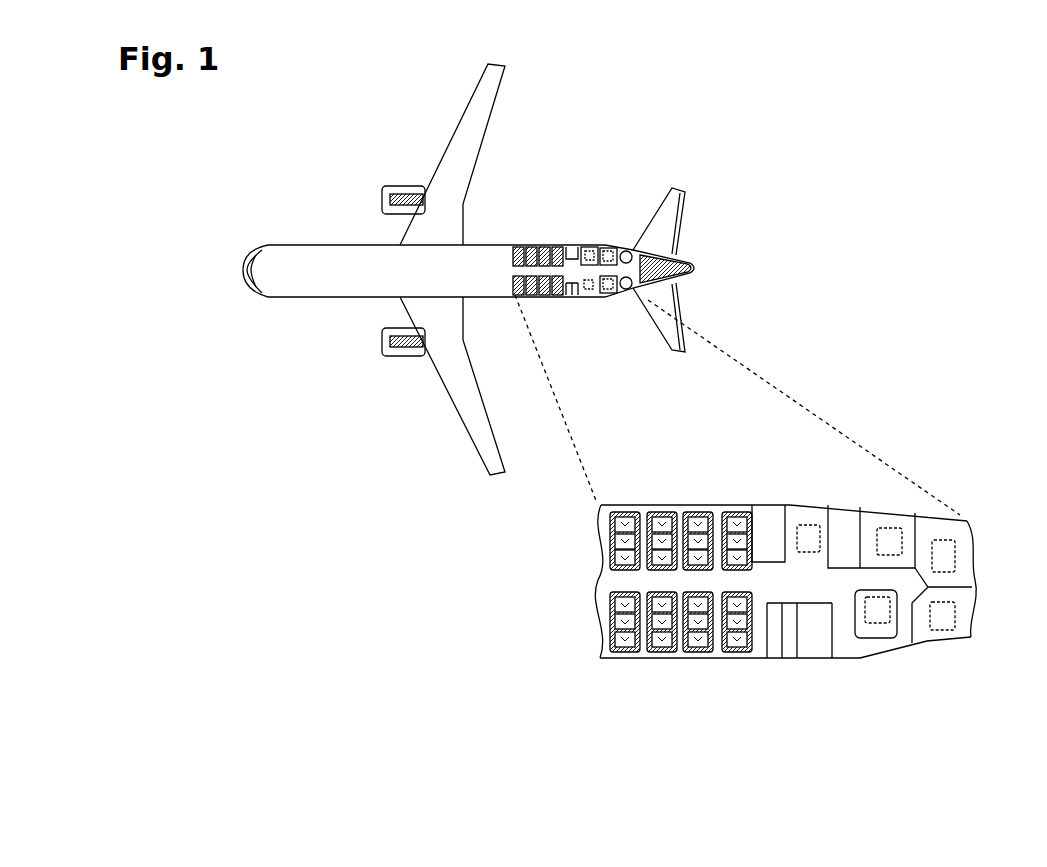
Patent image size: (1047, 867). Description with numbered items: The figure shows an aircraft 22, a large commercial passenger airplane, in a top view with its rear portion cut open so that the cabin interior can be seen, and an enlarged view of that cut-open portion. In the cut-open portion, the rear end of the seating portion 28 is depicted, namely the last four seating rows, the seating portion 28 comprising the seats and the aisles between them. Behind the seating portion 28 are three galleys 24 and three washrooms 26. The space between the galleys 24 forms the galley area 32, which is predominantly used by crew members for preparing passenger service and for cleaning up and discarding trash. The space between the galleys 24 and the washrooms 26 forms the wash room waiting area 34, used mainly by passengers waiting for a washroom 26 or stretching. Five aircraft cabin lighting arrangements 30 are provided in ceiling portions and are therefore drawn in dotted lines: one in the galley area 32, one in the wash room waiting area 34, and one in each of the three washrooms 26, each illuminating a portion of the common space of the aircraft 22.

The aircraft 22 is at (591, 168).
The galley 24 is at (770, 523).
The washroom 26 is at (907, 523).
The seating portion 28 is at (680, 580).
The aircraft cabin lighting arrangement 30 is at (812, 532).
The galley area 32 is at (790, 582).
The wash room waiting area 34 is at (870, 587).